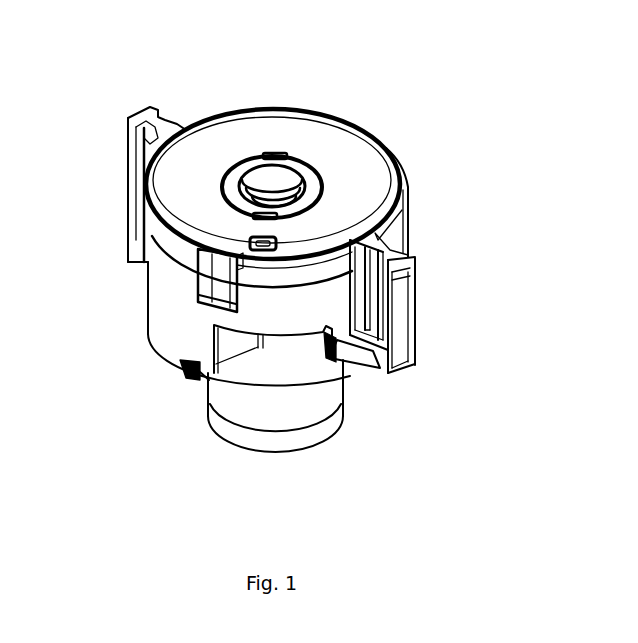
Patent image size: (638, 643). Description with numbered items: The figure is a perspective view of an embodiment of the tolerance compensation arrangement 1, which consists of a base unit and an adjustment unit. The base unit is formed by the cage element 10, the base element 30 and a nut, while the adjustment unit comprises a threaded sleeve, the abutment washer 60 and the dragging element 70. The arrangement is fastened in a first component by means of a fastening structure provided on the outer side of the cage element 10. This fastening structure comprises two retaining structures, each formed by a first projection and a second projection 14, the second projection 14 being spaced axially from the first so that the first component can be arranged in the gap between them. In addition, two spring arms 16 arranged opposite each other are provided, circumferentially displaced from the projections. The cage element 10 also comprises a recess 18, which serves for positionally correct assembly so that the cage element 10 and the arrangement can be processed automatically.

The tolerance compensation arrangement 1 is at (534, 54).
The cage element 10 is at (408, 218).
The second projection 14 is at (180, 367).
The spring arms 16 is at (350, 372).
The recess 18 is at (143, 277).
The base element 30 is at (305, 410).
The abutment washer 60 is at (277, 132).
The dragging element 70 is at (240, 170).